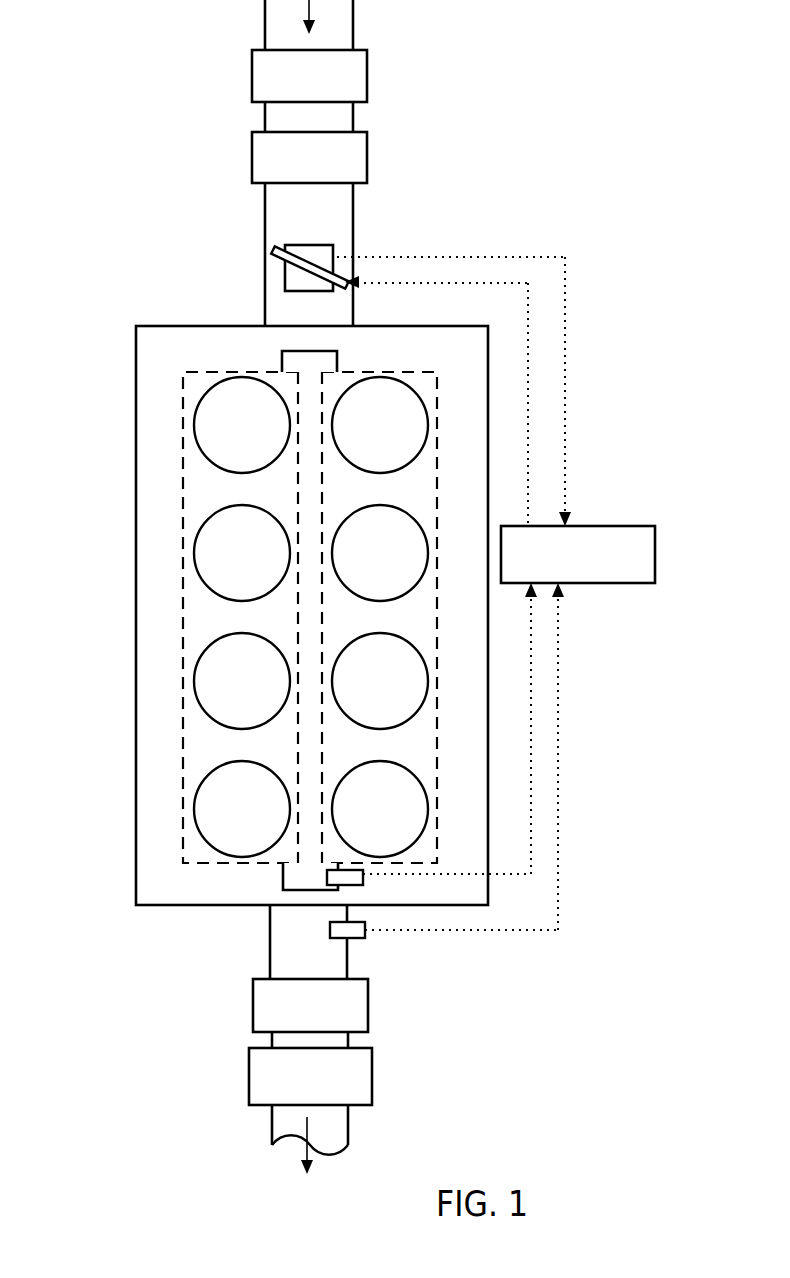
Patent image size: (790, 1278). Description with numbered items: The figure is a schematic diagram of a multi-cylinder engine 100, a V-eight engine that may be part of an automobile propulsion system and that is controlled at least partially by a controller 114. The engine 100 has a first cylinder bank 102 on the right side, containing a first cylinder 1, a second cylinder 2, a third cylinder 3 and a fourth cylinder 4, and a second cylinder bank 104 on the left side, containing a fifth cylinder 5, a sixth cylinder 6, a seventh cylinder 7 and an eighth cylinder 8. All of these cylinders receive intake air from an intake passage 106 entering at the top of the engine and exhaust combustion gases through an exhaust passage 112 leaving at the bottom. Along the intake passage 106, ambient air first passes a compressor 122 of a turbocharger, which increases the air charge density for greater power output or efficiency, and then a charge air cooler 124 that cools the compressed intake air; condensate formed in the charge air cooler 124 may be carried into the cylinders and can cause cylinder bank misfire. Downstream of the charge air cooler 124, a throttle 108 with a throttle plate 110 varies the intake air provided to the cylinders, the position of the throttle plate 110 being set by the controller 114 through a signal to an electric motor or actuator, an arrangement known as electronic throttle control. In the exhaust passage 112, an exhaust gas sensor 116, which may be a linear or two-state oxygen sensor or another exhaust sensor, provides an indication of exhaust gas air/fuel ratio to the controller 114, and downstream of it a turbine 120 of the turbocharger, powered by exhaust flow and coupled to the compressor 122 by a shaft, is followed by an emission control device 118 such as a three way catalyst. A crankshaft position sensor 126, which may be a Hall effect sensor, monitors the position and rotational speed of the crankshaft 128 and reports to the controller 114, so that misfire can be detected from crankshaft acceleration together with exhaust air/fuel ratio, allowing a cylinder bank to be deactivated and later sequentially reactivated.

The multi-cylinder engine 100 is at (126, 304).
The first cylinder bank 102 is at (437, 412).
The second cylinder bank 104 is at (183, 408).
The intake passage 106 is at (309, 163).
The throttle 108 is at (300, 245).
The throttle plate 110 is at (343, 288).
The exhaust passage 112 is at (308, 942).
The controller 114 is at (655, 553).
The exhaust gas sensor 116 is at (360, 938).
The emission control device 118 is at (310, 1076).
The turbine 120 is at (310, 1005).
The compressor 122 is at (309, 76).
The charge air cooler 124 is at (309, 157).
The crankshaft position sensor 126 is at (356, 885).
The crankshaft 128 is at (337, 365).
The first cylinder 1 is at (380, 425).
The second cylinder 2 is at (380, 553).
The third cylinder 3 is at (380, 681).
The fourth cylinder 4 is at (380, 809).
The fifth cylinder 5 is at (242, 425).
The sixth cylinder 6 is at (242, 553).
The seventh cylinder 7 is at (242, 681).
The eighth cylinder 8 is at (242, 809).